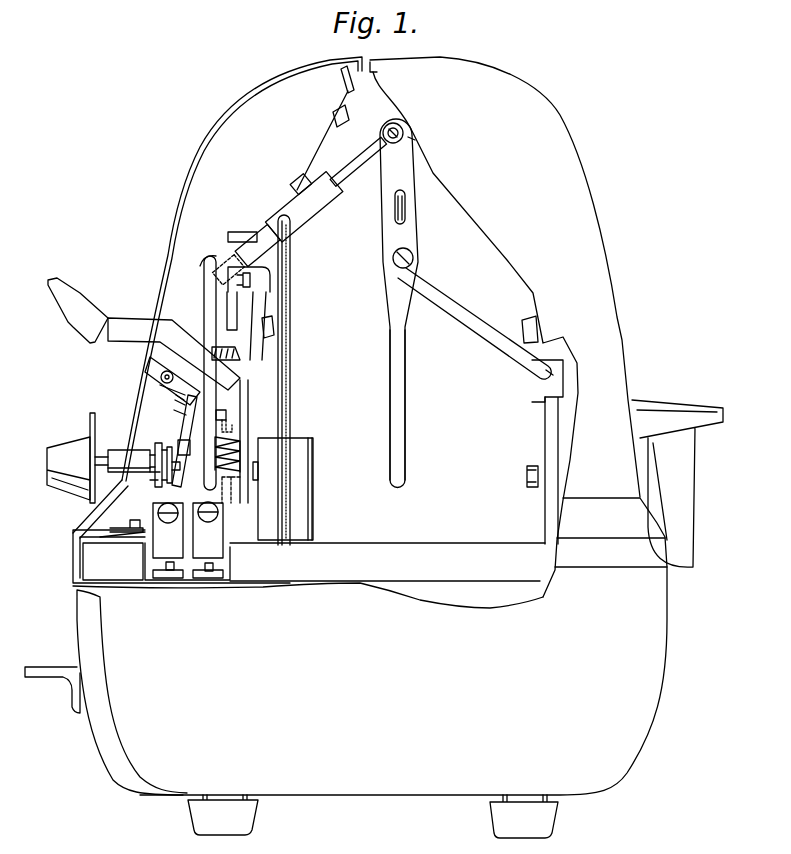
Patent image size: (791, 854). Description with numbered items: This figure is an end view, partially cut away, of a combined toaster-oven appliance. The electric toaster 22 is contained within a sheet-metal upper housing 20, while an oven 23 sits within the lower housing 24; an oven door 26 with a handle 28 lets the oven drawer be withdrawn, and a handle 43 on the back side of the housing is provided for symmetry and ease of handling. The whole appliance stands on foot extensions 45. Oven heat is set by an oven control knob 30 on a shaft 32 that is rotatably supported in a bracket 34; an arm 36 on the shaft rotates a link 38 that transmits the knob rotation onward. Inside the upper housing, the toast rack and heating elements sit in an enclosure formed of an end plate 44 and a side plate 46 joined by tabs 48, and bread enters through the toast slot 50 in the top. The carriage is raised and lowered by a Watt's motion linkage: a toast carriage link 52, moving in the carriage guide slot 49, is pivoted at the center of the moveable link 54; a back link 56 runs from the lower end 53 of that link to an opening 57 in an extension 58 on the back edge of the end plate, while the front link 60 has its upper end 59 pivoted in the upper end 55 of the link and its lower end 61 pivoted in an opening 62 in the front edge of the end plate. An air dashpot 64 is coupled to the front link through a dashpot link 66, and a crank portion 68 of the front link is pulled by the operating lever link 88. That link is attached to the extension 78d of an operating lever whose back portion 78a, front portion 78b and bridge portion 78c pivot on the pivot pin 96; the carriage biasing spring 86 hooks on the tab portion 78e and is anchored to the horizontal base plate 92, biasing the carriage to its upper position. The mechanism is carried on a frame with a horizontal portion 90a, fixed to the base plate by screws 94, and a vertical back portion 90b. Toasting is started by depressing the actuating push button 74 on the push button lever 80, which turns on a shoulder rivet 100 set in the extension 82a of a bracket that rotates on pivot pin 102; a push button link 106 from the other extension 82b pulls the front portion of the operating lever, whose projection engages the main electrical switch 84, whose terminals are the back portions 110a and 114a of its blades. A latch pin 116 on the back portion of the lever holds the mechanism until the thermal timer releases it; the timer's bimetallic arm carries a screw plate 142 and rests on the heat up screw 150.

The upper housing 20 is at (227, 111).
The electric toaster 22 is at (272, 198).
The oven 23 is at (467, 591).
The lower housing 24 is at (640, 727).
The oven door 26 is at (103, 736).
The handle 28 is at (40, 666).
The oven control knob 30 is at (58, 451).
The shaft 32 is at (100, 454).
The bracket 34 is at (170, 483).
The arm 36 is at (128, 491).
The link 38 is at (175, 496).
The handle 43 is at (712, 411).
The end plate 44 is at (320, 138).
The foot extension 45 is at (247, 823).
The side plate 46 is at (343, 79).
The tab 48 is at (333, 112).
The carriage guide slot 49 is at (400, 388).
The toast slot 50 is at (373, 62).
The toast carriage link 52 is at (408, 214).
The lower end of link 54 53 is at (415, 259).
The moveable link 54 is at (412, 186).
The upper end of link 54 55 is at (408, 138).
The back link 56 is at (487, 299).
The opening 57 is at (560, 373).
The extension 58 is at (555, 391).
The upper end of front link 59 is at (383, 131).
The front link 60 is at (371, 153).
The lower end of front link 61 is at (253, 240).
The opening 62 is at (237, 251).
The air dashpot 64 is at (313, 452).
The dashpot link 66 is at (291, 341).
The crank portion 68 is at (206, 269).
The actuating push button 74 is at (62, 299).
The back portion of operating lever 78a is at (252, 300).
The front portion of operating lever 78b is at (173, 474).
The bridge portion 78c is at (190, 431).
The extension of operating lever 78d is at (250, 498).
The tab portion 78e is at (257, 401).
The push button lever 80 is at (135, 326).
The extension of push button bracket 82a is at (160, 363).
The extension of push button bracket 82b is at (160, 386).
The main electrical switch 84 is at (130, 558).
The carriage biasing spring 86 is at (258, 424).
The operating lever link 88 is at (204, 301).
The horizontal portion of frame 90a is at (110, 534).
The vertical back portion of frame 90b is at (245, 354).
The horizontal base plate 92 is at (73, 551).
The screw 94 is at (132, 523).
The pivot pin 96 is at (185, 451).
The shoulder rivet 100 is at (160, 378).
The pivot pin 102 is at (230, 406).
The push button link 106 is at (178, 403).
The back portion of fixed blade 110a is at (162, 548).
The back portion of flexible blade 114a is at (208, 583).
The latch pin 116 is at (248, 282).
The screw plate 142 is at (176, 396).
The heat up screw 150 is at (178, 414).